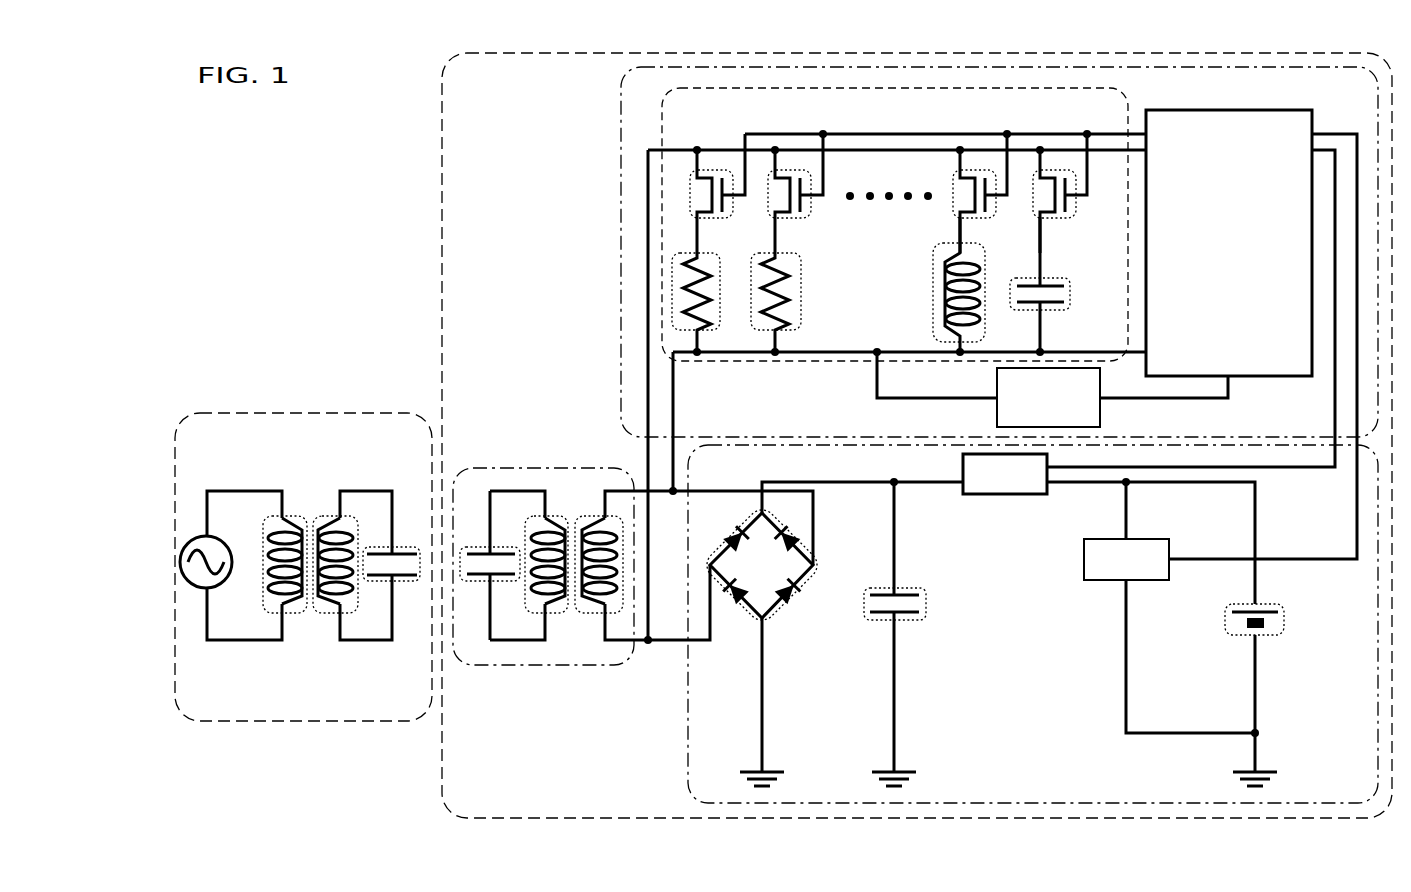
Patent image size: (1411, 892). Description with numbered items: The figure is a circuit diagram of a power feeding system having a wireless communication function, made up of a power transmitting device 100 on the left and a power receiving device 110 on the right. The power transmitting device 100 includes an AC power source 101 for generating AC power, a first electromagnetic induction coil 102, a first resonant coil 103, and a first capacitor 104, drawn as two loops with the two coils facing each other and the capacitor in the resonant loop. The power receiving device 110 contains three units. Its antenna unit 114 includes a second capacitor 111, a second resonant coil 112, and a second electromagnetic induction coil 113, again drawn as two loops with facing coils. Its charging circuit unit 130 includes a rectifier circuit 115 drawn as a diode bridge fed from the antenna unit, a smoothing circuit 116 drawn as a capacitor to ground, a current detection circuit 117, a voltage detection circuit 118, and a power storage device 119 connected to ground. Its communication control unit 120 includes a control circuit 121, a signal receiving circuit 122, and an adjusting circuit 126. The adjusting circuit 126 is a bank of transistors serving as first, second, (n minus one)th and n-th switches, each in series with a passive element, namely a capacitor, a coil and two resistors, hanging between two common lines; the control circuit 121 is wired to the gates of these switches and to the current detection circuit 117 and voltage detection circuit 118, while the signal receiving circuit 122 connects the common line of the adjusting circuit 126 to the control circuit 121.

The power transmitting device 100 is at (238, 701).
The AC power source 101 is at (215, 540).
The first electromagnetic induction coil 102 is at (304, 516).
The first resonant coil 103 is at (326, 613).
The first capacitor 104 is at (400, 581).
The power receiving device 110 is at (535, 806).
The second capacitor 111 is at (472, 548).
The second resonant coil 112 is at (554, 516).
The second electromagnetic induction coil 113 is at (584, 516).
The antenna unit 114 is at (558, 665).
The rectifier circuit 115 is at (741, 624).
The smoothing circuit 116 is at (915, 589).
The current detection circuit 117 is at (1005, 474).
The voltage detection circuit 118 is at (1126, 559).
The power storage device 119 is at (1236, 635).
The communication control unit 120 is at (749, 419).
The control circuit 121 is at (1229, 243).
The signal receiving circuit 122 is at (1048, 397).
The adjusting circuit 126 is at (1111, 342).
The charging circuit unit 130 is at (1339, 787).